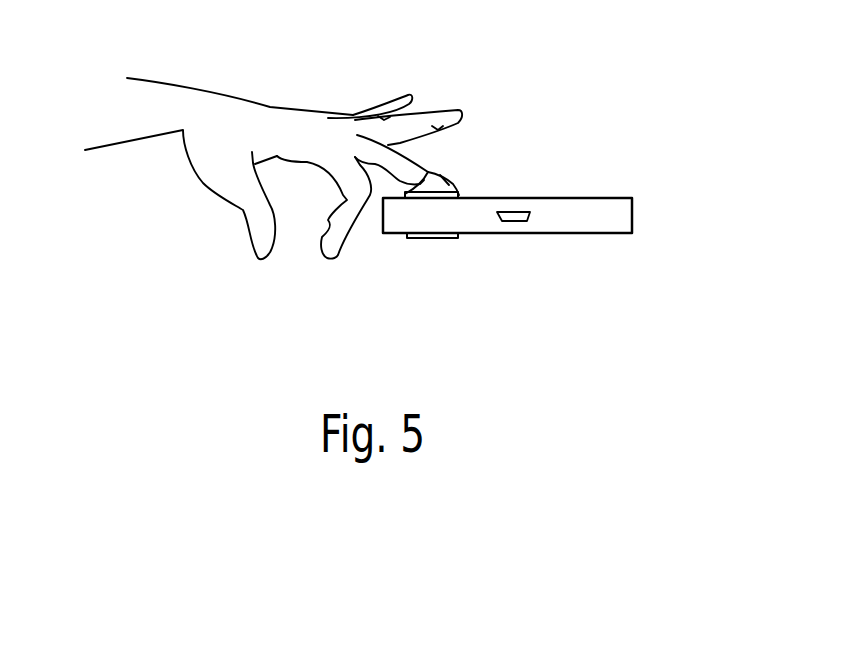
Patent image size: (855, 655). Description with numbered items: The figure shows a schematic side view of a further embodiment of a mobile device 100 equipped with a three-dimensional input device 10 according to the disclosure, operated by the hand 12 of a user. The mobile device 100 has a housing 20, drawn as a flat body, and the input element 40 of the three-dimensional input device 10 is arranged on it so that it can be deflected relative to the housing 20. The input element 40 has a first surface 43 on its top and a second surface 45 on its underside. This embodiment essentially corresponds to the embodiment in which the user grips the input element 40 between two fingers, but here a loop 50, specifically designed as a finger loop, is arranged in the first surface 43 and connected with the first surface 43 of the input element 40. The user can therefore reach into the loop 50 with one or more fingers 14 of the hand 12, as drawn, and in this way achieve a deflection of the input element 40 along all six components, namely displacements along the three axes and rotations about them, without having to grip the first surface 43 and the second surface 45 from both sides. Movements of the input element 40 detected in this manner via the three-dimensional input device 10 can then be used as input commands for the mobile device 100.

The 3D input device 10 is at (502, 102).
The hand 12 is at (287, 120).
The finger 14 is at (398, 168).
The housing 20 is at (618, 218).
The input element 40 is at (469, 255).
The first surface 43 is at (462, 198).
The second surface 45 is at (408, 238).
The loop 50 is at (447, 178).
The mobile device 100 is at (593, 255).